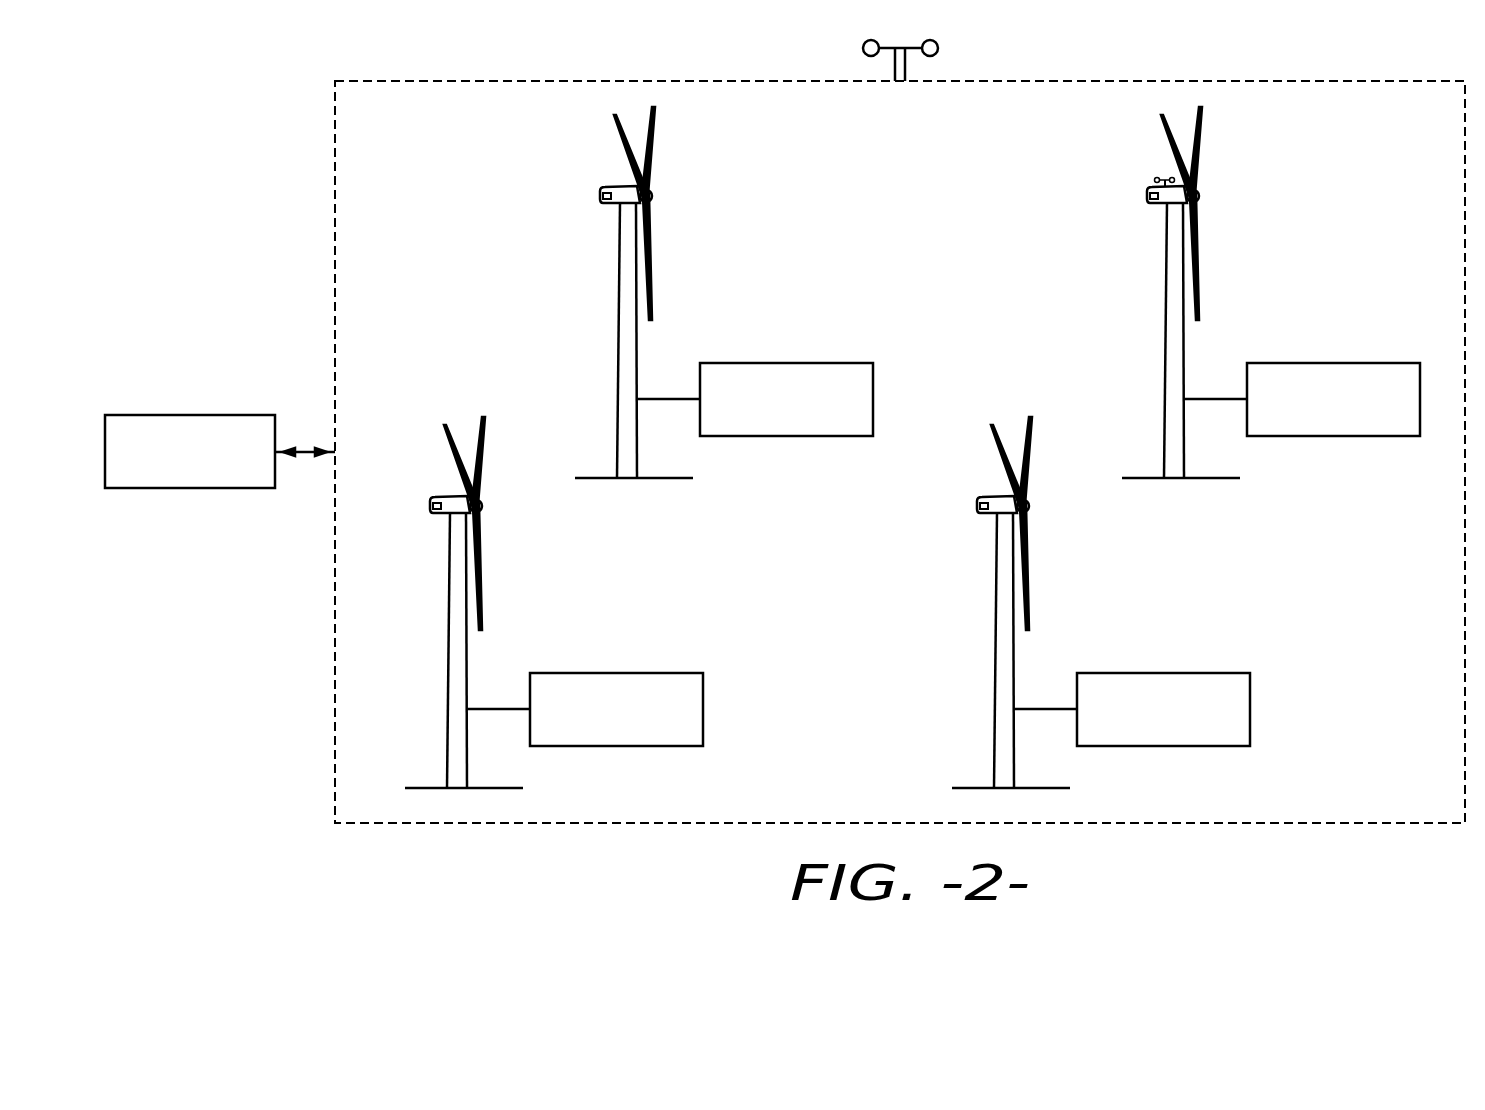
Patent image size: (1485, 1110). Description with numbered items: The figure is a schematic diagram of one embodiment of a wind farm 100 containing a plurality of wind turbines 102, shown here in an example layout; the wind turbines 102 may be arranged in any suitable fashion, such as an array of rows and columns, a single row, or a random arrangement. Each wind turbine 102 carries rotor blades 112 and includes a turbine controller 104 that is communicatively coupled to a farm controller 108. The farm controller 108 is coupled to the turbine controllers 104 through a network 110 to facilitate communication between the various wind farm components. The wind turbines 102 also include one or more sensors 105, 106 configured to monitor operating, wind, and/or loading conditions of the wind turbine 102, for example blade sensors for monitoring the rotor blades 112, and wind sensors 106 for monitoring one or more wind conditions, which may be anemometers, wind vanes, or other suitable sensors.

The wind farm 100 is at (235, 143).
The wind turbine 102 is at (600, 192).
The turbine controller 104 is at (807, 360).
The sensor 105 is at (607, 208).
The wind sensor 106 is at (863, 48).
The farm controller 108 is at (165, 415).
The network 110 is at (300, 452).
The rotor blade 112 is at (650, 232).